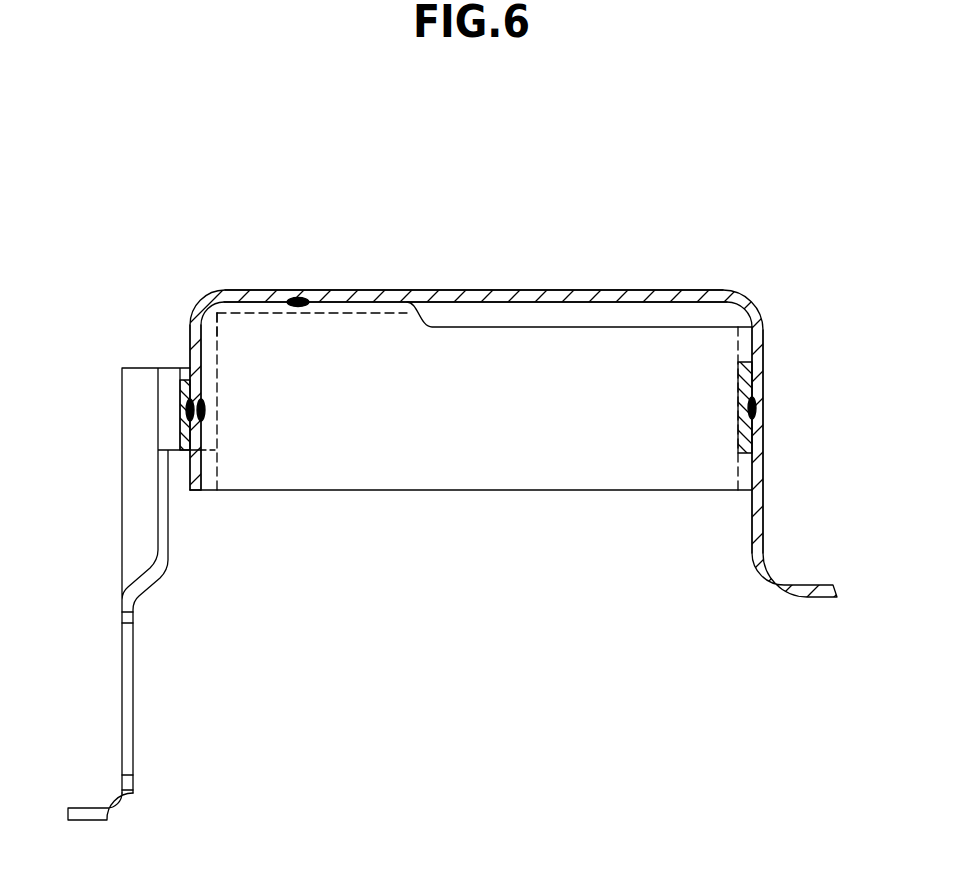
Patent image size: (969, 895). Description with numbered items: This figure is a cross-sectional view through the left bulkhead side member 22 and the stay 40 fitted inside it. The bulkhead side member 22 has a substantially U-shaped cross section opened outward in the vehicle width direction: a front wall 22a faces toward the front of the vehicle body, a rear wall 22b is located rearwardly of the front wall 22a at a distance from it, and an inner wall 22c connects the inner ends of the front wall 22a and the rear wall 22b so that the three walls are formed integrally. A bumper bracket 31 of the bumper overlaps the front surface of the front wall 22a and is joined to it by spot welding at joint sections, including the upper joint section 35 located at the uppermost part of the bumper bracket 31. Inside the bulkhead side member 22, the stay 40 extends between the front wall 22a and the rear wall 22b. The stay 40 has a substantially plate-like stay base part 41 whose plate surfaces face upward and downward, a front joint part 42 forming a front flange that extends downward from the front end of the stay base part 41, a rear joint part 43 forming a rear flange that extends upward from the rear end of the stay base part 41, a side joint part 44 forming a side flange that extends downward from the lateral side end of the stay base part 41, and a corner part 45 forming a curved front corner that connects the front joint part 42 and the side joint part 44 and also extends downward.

The bulkhead side member 22 is at (813, 140).
The front wall 22a is at (193, 343).
The rear wall 22b is at (757, 356).
The inner wall 22c is at (490, 290).
The bumper bracket 31 is at (128, 735).
The upper joint section 35 is at (183, 407).
The stay 40 is at (713, 637).
The stay base part 41 is at (540, 463).
The front joint part 42 is at (217, 432).
The rear joint part 43 is at (742, 440).
The side joint part 44 is at (338, 303).
The corner part 45 is at (223, 322).